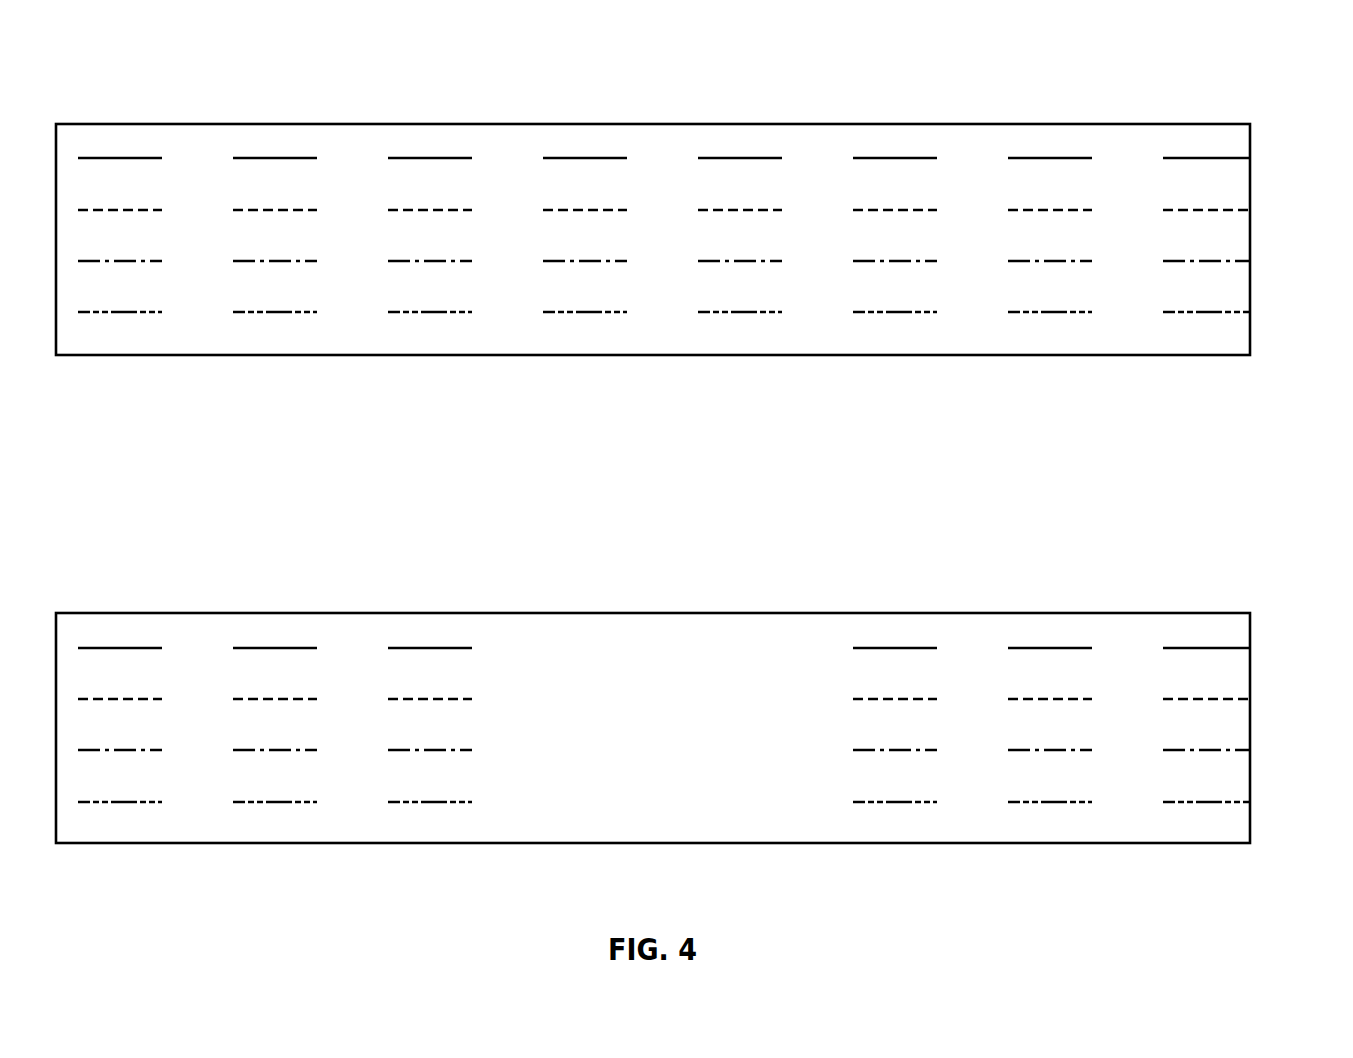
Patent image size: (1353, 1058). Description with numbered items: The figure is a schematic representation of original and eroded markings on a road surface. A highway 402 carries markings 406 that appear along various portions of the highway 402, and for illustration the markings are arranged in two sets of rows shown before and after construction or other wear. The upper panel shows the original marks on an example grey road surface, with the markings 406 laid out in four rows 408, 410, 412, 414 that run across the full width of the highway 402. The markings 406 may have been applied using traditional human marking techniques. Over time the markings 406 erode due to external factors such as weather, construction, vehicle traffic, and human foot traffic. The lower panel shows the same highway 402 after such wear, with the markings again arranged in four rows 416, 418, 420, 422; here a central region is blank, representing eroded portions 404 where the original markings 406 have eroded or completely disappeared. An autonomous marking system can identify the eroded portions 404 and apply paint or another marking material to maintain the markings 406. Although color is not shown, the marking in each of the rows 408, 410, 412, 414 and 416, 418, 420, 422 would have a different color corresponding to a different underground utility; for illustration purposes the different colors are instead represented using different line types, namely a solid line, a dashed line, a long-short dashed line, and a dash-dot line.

The highway 402 is at (152, 78).
The eroded portion 404 is at (578, 826).
The marking 406 is at (1058, 154).
The row of markings 408 is at (1256, 157).
The row of markings 410 is at (1256, 209).
The row of markings 412 is at (1256, 260).
The row of markings 414 is at (1256, 311).
The row of markings 416 is at (1256, 647).
The row of markings 418 is at (1256, 698).
The row of markings 420 is at (1256, 749).
The row of markings 422 is at (1256, 801).